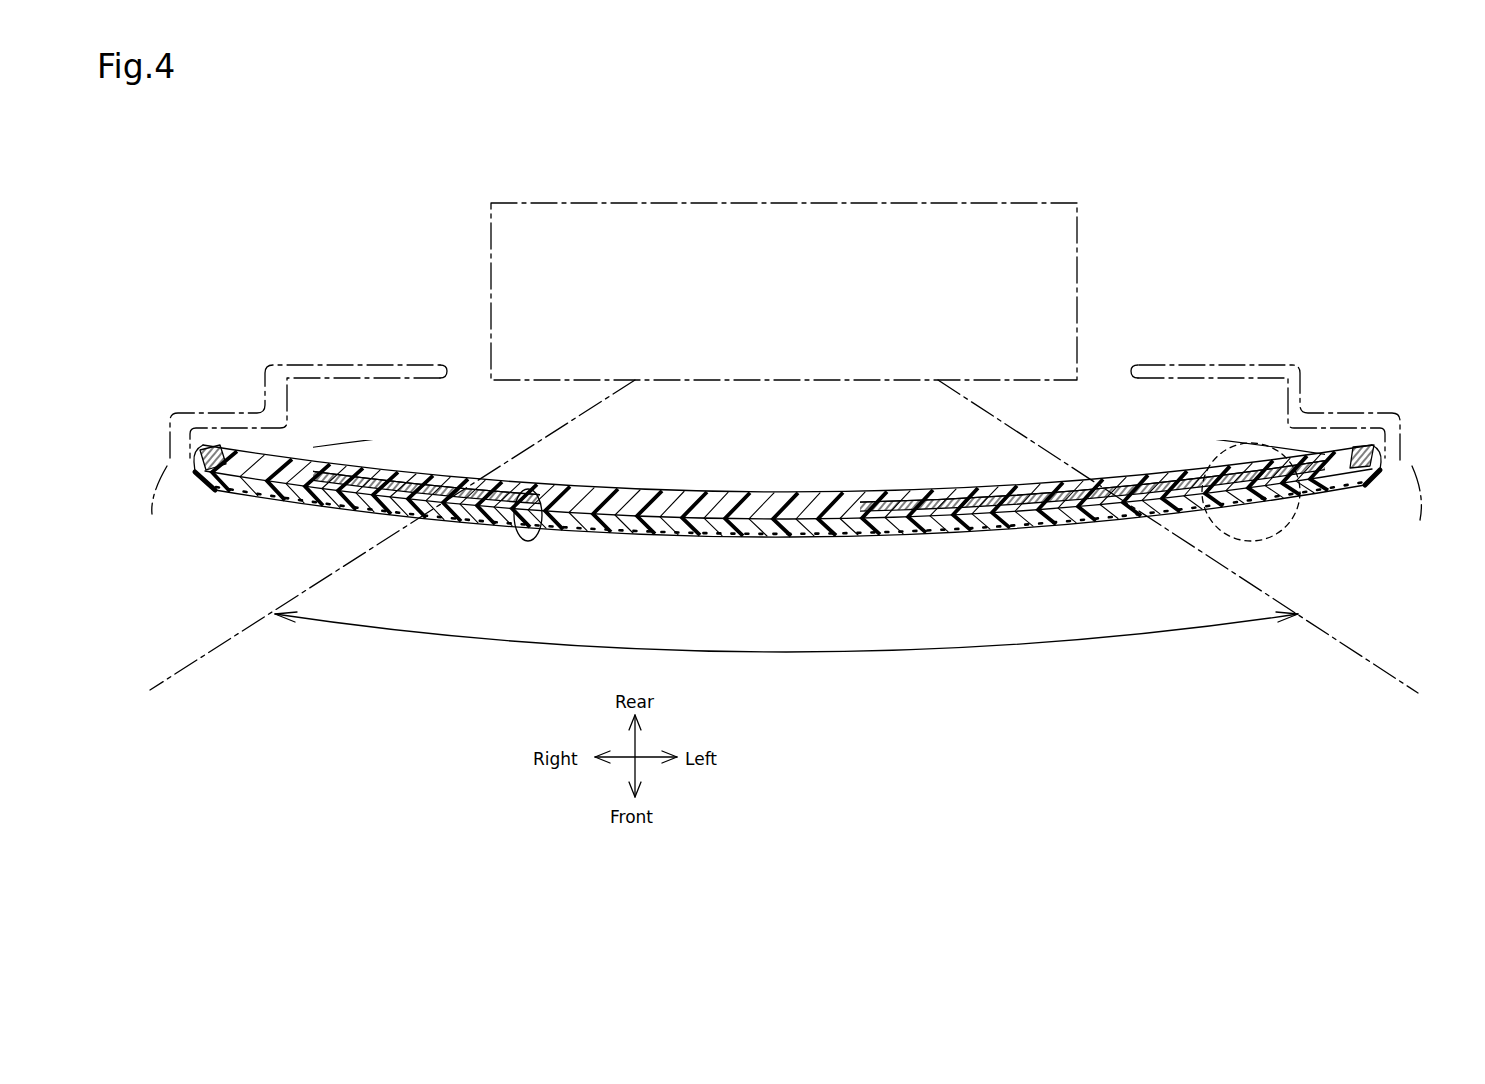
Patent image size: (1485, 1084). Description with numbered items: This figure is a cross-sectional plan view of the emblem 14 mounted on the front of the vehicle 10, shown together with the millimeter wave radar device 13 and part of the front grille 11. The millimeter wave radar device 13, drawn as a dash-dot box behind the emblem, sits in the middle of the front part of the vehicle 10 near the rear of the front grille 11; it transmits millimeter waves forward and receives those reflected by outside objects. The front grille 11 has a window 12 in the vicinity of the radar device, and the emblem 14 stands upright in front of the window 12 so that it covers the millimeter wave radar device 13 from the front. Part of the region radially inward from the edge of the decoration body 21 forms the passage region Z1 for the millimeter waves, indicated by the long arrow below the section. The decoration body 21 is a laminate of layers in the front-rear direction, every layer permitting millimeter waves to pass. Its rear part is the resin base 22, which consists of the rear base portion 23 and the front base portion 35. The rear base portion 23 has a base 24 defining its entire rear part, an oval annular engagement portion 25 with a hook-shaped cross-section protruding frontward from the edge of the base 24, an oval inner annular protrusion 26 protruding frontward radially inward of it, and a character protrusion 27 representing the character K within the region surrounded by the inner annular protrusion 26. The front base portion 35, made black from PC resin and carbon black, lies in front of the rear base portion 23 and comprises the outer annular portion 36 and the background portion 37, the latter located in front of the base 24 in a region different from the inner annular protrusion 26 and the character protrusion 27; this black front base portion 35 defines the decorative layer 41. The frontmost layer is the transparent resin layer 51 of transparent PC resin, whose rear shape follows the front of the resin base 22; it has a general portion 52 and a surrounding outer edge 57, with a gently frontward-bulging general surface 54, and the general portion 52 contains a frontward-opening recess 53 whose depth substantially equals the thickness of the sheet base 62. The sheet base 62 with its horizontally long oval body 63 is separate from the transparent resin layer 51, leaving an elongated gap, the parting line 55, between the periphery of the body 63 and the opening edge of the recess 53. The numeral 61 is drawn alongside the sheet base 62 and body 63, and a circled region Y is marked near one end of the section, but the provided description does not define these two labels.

The vehicle 10 is at (270, 759).
The front grille 11 is at (318, 364).
The window 12 is at (448, 365).
The millimeter wave radar device 13 is at (1078, 252).
The emblem 14 is at (784, 576).
The decoration body 21 is at (787, 494).
The resin base 22 is at (787, 449).
The rear base portion 23 is at (934, 457).
The base 24 is at (934, 457).
The annular engagement portion 25 is at (790, 509).
The inner annular protrusion 26 is at (258, 500).
The character protrusion 27 is at (612, 526).
The front base portion 35 is at (779, 416).
The outer annular portion 36 is at (787, 457).
The background portion 37 is at (779, 416).
The decorative layer 41 is at (1364, 455).
The transparent resin layer 51 is at (788, 514).
The general portion 52 is at (945, 530).
The recess 53 is at (540, 512).
The general surface 54 is at (517, 466).
The parting line 55 is at (212, 500).
The outer edge 57 is at (203, 495).
The coating film 61 is at (1026, 619).
The sheet base 62 is at (1026, 619).
The body 63 is at (790, 557).
The enlarged region Y is at (1272, 538).
The passage region Z1 is at (1140, 640).